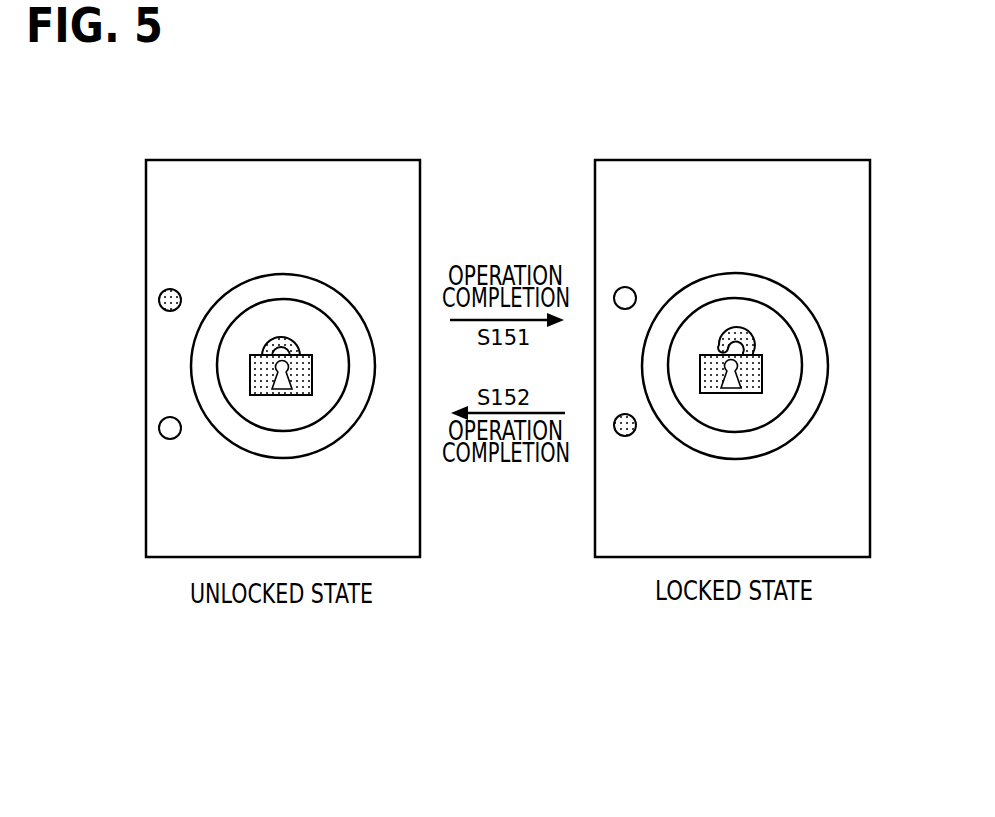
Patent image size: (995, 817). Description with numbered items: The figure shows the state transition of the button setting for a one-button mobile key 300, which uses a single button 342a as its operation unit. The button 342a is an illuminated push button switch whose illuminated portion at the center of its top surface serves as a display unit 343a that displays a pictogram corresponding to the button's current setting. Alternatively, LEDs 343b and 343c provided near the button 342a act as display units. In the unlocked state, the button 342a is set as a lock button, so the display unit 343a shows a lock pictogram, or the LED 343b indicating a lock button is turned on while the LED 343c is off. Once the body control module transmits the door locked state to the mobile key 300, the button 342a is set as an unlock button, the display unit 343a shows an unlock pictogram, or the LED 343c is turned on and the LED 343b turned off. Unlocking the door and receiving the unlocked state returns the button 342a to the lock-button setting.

The one-button mobile key 300 is at (270, 160).
The button 342a is at (228, 303).
The display unit 343a is at (277, 412).
The LED 343b is at (158, 295).
The LED 343c is at (163, 438).